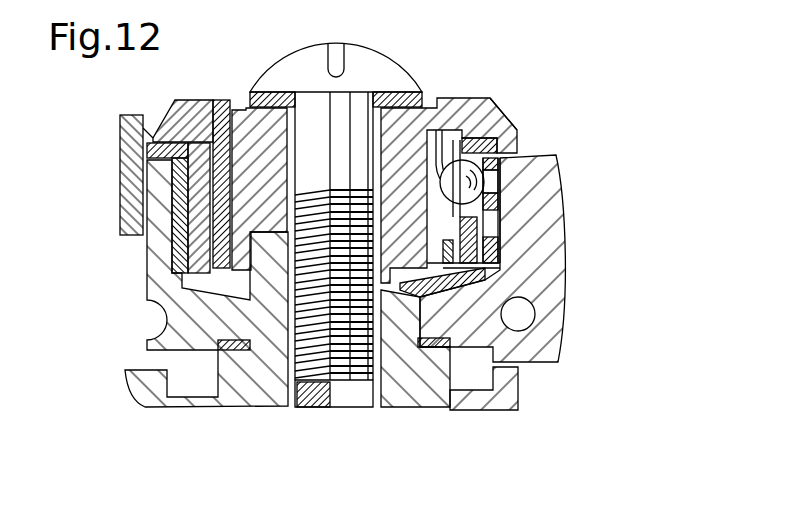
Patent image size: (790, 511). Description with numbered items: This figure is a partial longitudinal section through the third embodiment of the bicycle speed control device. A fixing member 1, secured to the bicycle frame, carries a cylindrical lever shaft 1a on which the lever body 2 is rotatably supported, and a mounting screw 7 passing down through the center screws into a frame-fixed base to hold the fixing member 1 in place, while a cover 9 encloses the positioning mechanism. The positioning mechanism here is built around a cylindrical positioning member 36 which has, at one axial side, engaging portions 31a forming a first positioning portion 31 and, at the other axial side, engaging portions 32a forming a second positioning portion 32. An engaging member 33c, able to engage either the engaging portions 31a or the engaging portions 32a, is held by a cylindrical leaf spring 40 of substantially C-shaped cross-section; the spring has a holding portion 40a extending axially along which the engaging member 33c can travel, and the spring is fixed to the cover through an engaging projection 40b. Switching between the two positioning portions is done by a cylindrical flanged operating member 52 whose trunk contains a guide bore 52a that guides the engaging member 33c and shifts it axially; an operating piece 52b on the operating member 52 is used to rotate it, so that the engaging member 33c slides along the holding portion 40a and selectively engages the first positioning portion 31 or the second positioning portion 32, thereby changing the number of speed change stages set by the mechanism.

The fixing member 1 is at (420, 387).
The lever shaft 1a is at (518, 364).
The lever body 2 is at (557, 297).
The mounting screw 7 is at (366, 62).
The cover 9 is at (392, 110).
The first positioning portion 31 is at (500, 264).
The engaging portions 31a is at (498, 232).
The second positioning portion 32 is at (500, 164).
The engaging portions 32a is at (498, 185).
The engaging member 33c is at (498, 204).
The cylindrical positioning member 36 is at (165, 246).
The cylindrical leaf spring 40 is at (452, 165).
The holding portion 40a is at (441, 172).
The engaging projection 40b is at (221, 106).
The cylindrical flanged operating member 52 is at (498, 143).
The guide bore 52a is at (492, 100).
The operating piece 52b is at (120, 178).